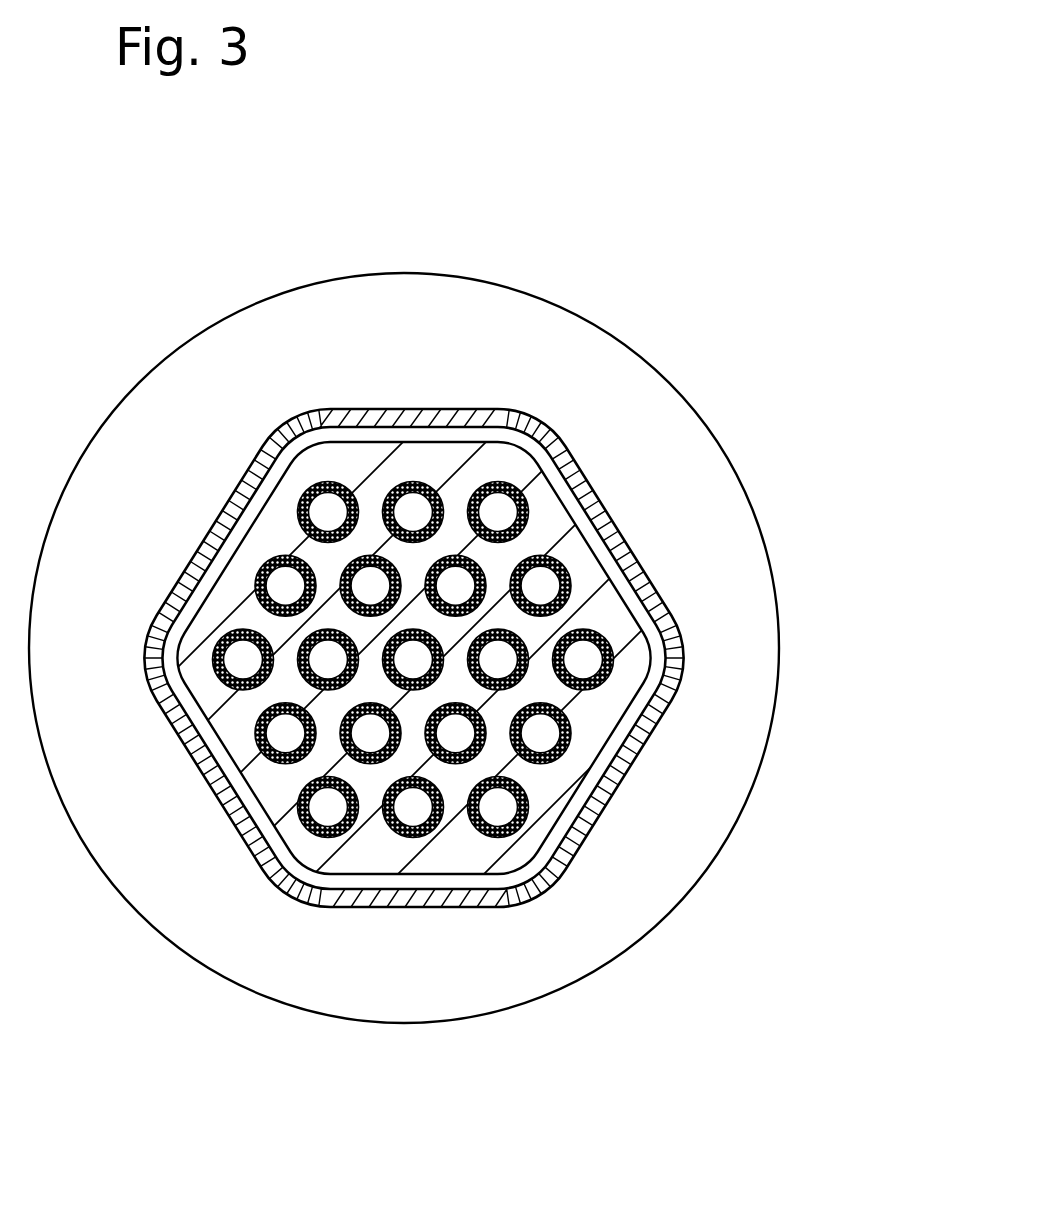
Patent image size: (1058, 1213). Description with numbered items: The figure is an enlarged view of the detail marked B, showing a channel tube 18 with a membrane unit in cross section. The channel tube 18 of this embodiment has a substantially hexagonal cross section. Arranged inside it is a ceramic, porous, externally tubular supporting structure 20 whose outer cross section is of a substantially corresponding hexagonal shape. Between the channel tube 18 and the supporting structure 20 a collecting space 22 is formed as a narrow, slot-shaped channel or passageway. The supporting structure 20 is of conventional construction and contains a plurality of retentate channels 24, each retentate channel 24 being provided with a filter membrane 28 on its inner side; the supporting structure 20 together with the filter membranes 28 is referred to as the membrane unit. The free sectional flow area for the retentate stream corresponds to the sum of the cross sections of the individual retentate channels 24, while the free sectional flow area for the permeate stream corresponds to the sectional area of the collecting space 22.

The channel tube 18 is at (640, 563).
The collecting space 22 is at (585, 493).
The supporting structure 20 is at (617, 700).
The retentate channel 24 is at (497, 508).
The filter membrane 28 is at (298, 508).
The detail B is at (702, 415).